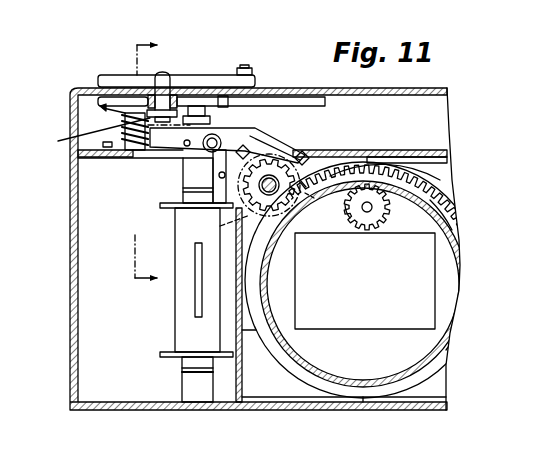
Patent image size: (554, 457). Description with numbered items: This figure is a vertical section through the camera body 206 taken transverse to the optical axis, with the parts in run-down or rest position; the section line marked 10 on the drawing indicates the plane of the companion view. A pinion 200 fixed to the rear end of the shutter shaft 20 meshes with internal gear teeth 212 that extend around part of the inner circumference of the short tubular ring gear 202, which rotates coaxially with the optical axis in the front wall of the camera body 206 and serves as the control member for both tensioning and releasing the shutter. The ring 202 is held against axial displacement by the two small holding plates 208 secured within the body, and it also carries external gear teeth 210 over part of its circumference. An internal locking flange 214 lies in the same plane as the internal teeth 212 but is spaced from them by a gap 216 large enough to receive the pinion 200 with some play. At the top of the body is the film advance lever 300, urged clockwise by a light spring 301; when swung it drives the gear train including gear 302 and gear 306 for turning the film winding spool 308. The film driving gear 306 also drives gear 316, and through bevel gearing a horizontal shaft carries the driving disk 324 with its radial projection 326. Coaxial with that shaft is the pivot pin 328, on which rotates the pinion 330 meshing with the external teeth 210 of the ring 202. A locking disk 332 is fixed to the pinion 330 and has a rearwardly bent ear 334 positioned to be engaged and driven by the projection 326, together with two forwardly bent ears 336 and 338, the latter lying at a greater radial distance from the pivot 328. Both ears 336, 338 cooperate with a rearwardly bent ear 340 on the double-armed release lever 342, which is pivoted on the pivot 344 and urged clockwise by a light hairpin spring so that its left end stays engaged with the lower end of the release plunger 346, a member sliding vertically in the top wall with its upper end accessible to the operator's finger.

The section line 10- 10 is at (145, 165).
The shutter shaft 20 is at (366, 215).
The pinion 200 is at (384, 212).
The ring gear 202 is at (447, 210).
The camera body 206 is at (74, 221).
The holding plates 208 is at (390, 156).
The external gear teeth 210 is at (335, 167).
The internal gear teeth 212 is at (428, 212).
The internal locking flange 214 is at (345, 211).
The gap 216 is at (392, 173).
The film advance lever 300 is at (190, 83).
The spring 301 is at (90, 134).
The gear 302 is at (104, 109).
The gear 306 is at (212, 102).
The film winding spool 308 is at (178, 214).
The gear 316 is at (288, 101).
The driving disk 324 is at (221, 228).
The radial projection 326 is at (302, 154).
The pivot pin 328 is at (279, 212).
The pinion 330 is at (256, 185).
The locking disk 332 is at (242, 207).
The rearwardly bent ear 334 is at (314, 198).
The forwardly bent ear 336 is at (308, 182).
The forwardly bent ear 338 is at (243, 148).
The rearwardly bent ear 340 is at (268, 147).
The release lever 342 is at (225, 134).
The pivot 344 is at (198, 180).
The release plunger 346 is at (160, 74).